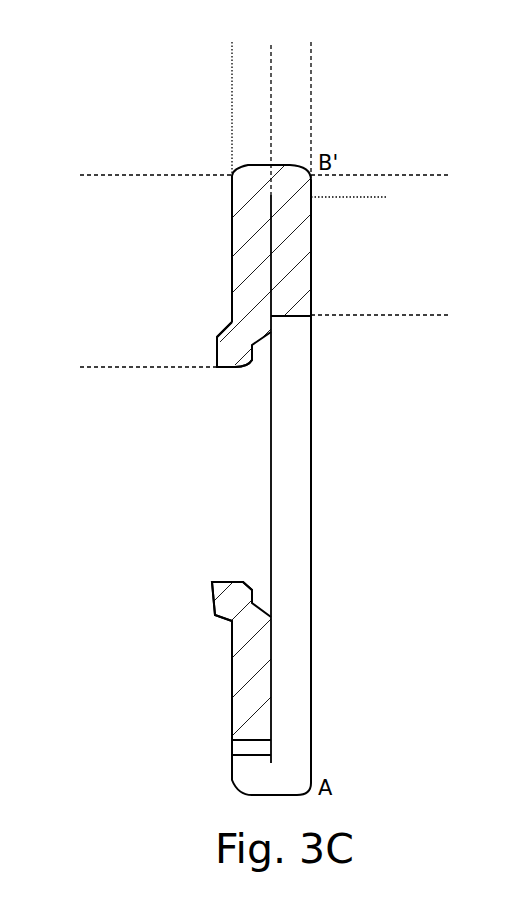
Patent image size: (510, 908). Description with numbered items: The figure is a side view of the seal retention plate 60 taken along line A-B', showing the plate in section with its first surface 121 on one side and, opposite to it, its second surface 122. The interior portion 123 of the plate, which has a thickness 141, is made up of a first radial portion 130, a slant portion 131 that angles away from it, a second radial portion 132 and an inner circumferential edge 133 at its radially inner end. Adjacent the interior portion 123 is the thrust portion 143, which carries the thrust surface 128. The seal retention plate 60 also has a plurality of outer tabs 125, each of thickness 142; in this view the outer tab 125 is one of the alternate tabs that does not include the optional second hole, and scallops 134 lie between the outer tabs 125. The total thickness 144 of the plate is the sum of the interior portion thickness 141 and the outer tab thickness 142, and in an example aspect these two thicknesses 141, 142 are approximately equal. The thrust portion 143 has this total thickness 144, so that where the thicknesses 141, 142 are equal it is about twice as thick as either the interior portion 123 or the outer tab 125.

The seal retention plate 60 is at (104, 134).
The first surface 121 is at (231, 223).
The second surface 122 is at (312, 337).
The interior portion 123 is at (90, 175).
The outer tab 125 is at (439, 175).
The thrust surface 128 is at (312, 290).
The first radial portion 130 is at (231, 290).
The slant portion 131 is at (225, 330).
The second radial portion 132 is at (216, 350).
The inner circumferential edge 133 is at (230, 370).
The scallops 134 is at (231, 740).
The thickness of interior portion 141 is at (271, 79).
The thickness of outer tab 142 is at (271, 79).
The thrust portion 143 is at (379, 197).
The total thickness 144 is at (311, 53).